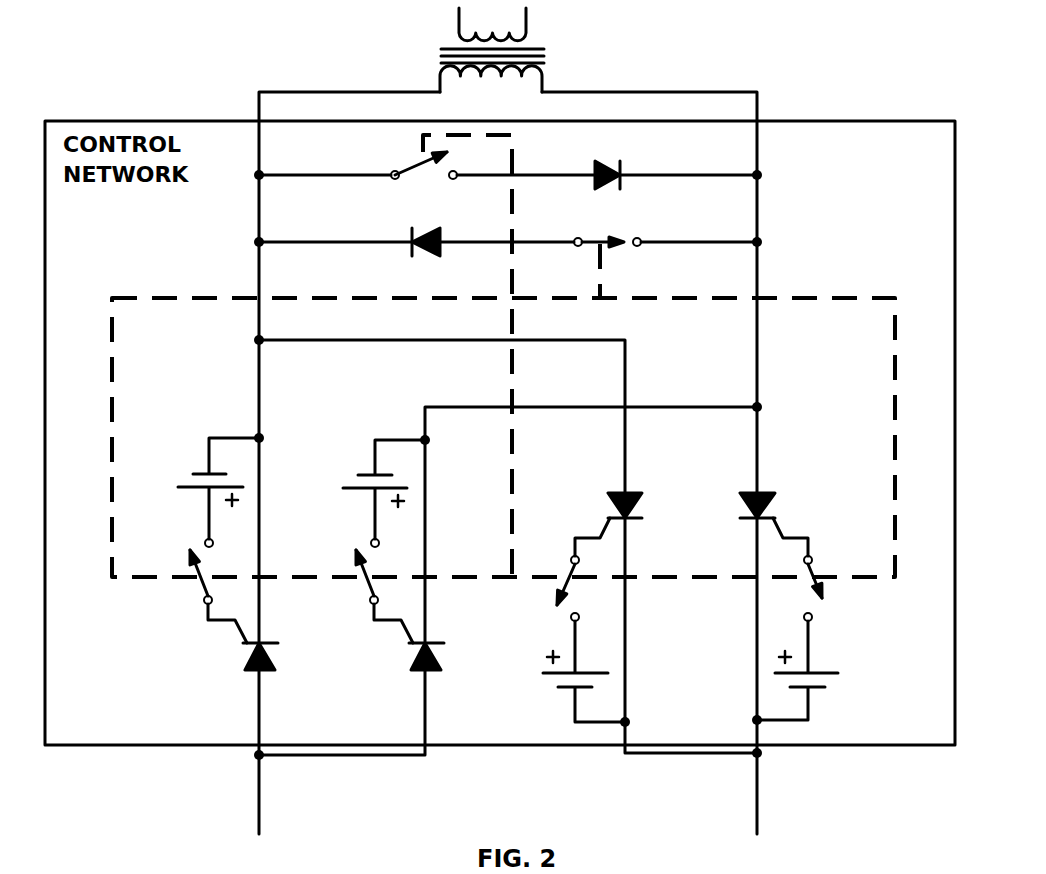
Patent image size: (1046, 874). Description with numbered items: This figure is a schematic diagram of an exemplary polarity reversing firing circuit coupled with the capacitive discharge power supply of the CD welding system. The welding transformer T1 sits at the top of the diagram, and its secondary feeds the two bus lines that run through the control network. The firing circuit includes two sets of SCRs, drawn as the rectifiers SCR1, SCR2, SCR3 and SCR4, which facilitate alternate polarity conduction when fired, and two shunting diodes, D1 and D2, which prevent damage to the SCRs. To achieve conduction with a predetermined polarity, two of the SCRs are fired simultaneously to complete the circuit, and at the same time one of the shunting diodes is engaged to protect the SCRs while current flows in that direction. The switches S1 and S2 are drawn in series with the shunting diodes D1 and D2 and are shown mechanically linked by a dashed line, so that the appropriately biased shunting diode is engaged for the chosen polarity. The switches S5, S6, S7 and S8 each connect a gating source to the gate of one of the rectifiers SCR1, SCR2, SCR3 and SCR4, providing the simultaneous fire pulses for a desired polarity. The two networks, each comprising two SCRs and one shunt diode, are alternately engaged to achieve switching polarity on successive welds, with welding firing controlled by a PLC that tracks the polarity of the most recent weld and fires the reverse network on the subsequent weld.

The transformer T1 is at (484, 59).
The switch S1 is at (427, 163).
The diode D1 is at (676, 165).
The switch S2 is at (648, 229).
The diode D2 is at (416, 253).
The switch S5 with battery S5 is at (218, 540).
The switch S6 with battery S6 is at (384, 541).
The switch S7 with battery S7 is at (582, 622).
The switch S8 with battery S8 is at (797, 621).
The silicon controlled rectifier SCR1 is at (224, 674).
The silicon controlled rectifier SCR2 is at (390, 674).
The silicon controlled rectifier SCR3 is at (582, 509).
The silicon controlled rectifier SCR4 is at (792, 509).